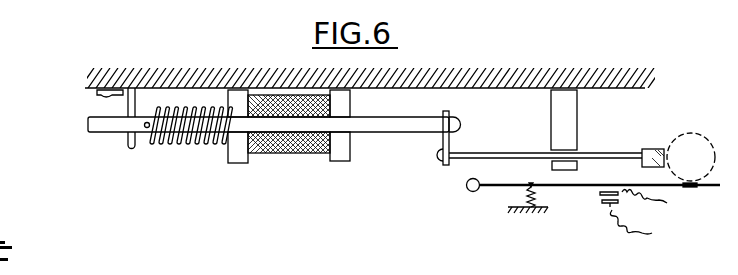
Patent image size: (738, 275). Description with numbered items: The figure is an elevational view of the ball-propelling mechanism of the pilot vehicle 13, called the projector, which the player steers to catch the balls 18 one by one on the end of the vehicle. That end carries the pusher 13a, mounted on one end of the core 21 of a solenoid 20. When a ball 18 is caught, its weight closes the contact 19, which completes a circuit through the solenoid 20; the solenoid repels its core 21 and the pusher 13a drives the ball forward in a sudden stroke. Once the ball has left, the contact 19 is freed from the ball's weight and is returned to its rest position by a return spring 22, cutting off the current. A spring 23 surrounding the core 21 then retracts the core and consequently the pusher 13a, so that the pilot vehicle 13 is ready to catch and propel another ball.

The pilot vehicle 13 is at (289, 79).
The pusher 13a is at (655, 159).
The ball 18 is at (694, 159).
The contact 19 is at (603, 205).
The solenoid 20 is at (295, 154).
The core 21 is at (409, 125).
The return spring 22 is at (527, 196).
The spring 23 is at (191, 139).